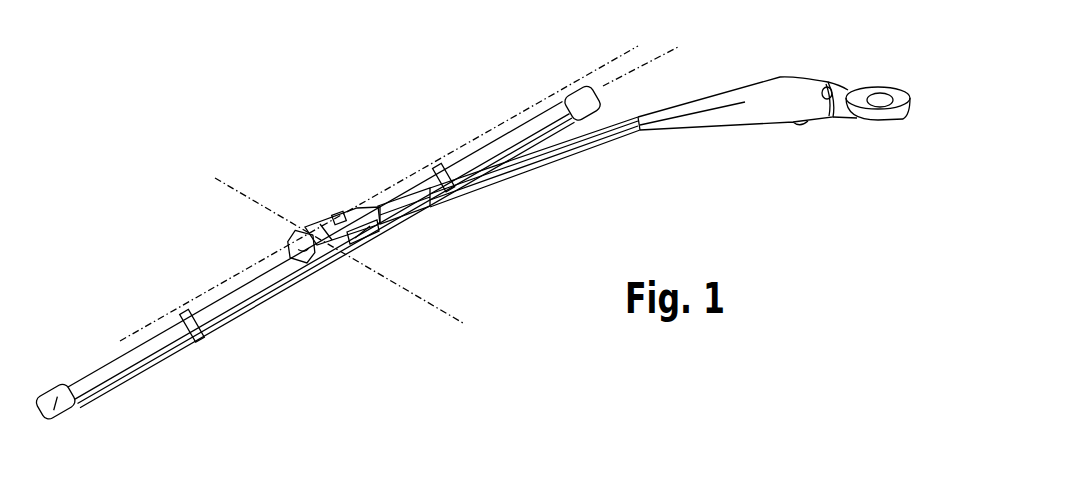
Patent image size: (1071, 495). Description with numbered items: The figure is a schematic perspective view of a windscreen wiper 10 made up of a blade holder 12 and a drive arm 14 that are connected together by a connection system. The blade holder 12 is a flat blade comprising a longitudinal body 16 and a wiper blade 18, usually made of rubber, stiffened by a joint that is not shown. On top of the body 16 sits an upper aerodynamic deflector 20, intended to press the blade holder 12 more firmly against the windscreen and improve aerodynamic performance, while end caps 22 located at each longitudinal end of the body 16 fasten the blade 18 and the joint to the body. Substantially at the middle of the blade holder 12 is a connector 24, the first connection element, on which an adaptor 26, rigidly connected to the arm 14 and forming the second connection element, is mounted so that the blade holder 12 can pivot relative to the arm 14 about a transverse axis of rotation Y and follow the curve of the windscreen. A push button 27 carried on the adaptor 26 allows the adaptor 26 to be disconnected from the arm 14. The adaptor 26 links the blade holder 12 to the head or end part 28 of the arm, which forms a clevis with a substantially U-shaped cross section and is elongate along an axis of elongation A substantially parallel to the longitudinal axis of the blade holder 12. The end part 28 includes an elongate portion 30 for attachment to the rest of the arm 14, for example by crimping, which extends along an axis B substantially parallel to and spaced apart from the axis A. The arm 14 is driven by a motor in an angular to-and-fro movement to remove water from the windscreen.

The windscreen wiper 10 is at (361, 138).
The blade holder 12 is at (107, 358).
The drive arm 14 is at (607, 154).
The longitudinal body 16 is at (319, 252).
The wiper blade 18 is at (325, 261).
The upper aerodynamic deflector 20 is at (315, 245).
The end caps 22 is at (318, 253).
The connector 24 is at (328, 258).
The adaptor 26 is at (302, 246).
The push button 27 is at (336, 212).
The end part 28 is at (312, 219).
The attachment portion 30 is at (413, 212).
The axis of elongation A is at (410, 186).
The axis B is at (659, 57).
The axis of rotation Y is at (413, 291).